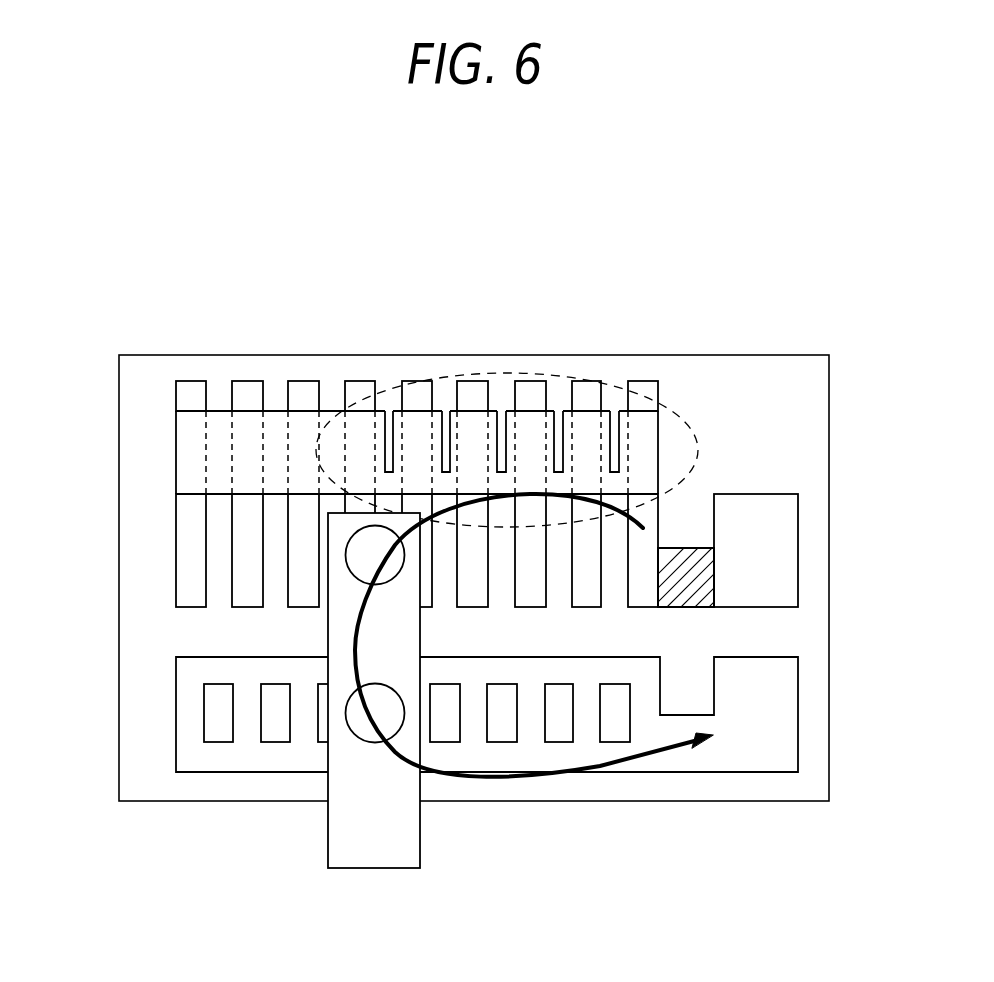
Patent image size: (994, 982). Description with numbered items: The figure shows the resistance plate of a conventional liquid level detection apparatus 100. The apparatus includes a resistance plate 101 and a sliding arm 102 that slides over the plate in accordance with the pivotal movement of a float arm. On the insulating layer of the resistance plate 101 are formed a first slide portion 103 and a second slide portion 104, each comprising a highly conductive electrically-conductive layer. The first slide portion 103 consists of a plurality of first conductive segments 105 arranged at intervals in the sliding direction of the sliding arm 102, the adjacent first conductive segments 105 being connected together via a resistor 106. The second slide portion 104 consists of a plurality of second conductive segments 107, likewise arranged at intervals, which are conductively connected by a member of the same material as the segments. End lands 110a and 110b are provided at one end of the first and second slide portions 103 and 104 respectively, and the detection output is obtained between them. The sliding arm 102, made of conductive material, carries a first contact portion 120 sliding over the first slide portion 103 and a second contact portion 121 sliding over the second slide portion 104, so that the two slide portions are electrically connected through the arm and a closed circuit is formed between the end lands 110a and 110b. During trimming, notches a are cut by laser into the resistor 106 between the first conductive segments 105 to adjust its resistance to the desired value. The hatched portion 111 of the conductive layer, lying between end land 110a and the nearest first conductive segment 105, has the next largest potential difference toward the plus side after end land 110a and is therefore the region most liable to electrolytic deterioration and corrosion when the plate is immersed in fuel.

The liquid level detection apparatus 100 is at (120, 275).
The resistance plate 101 is at (782, 335).
The sliding arm 102 is at (421, 832).
The first slide portion 103 is at (148, 547).
The second slide portion 104 is at (148, 711).
The first conductive segments 105 is at (192, 380).
The resistor 106 is at (333, 410).
The second conductive segments 107 is at (308, 725).
The end land 110a is at (783, 545).
The end land 110b is at (783, 720).
The portion of the conductive layer 111 is at (685, 607).
The first contact portion 120 is at (362, 588).
The second contact portion 121 is at (370, 746).
The notches a is at (502, 415).